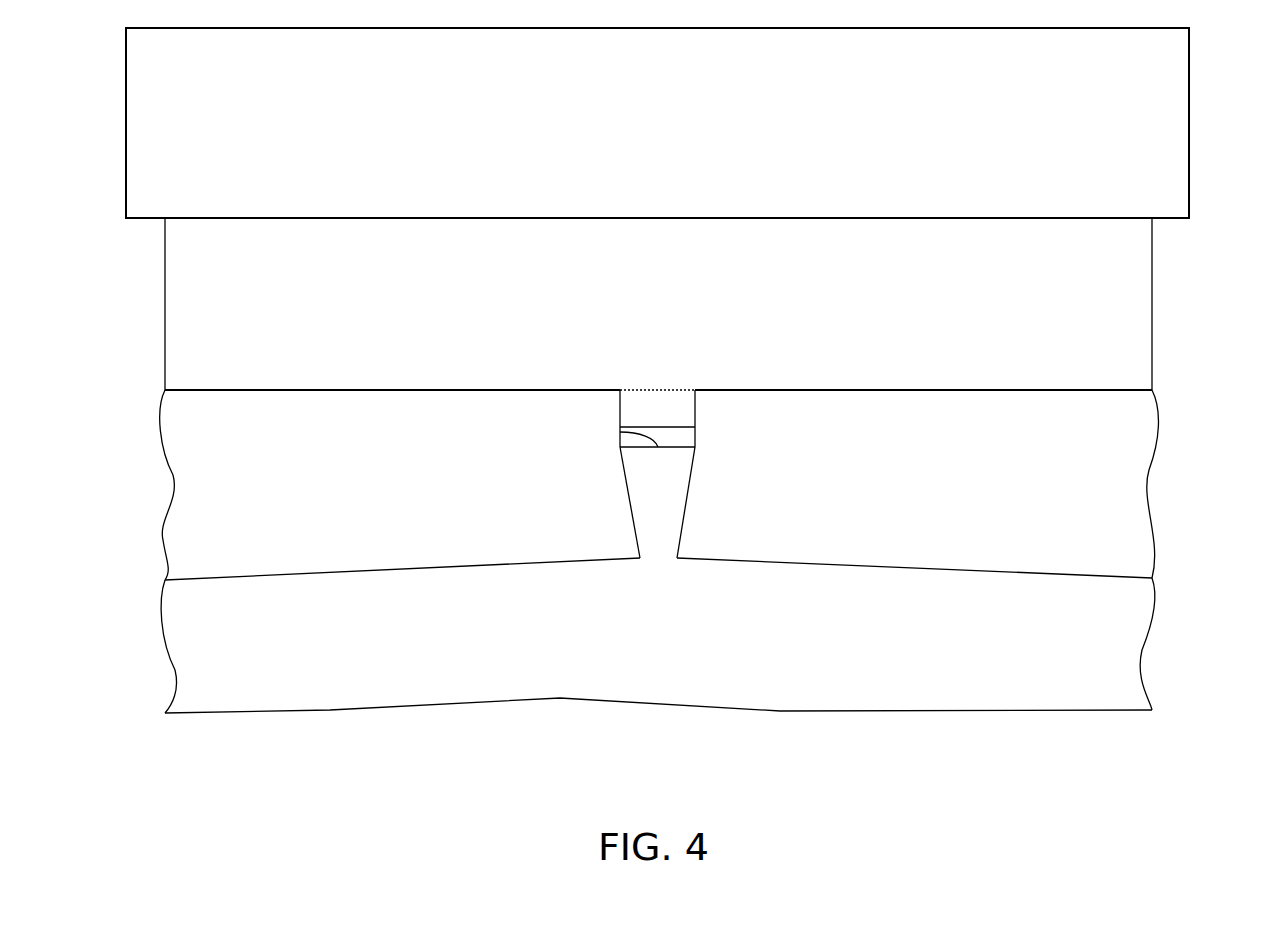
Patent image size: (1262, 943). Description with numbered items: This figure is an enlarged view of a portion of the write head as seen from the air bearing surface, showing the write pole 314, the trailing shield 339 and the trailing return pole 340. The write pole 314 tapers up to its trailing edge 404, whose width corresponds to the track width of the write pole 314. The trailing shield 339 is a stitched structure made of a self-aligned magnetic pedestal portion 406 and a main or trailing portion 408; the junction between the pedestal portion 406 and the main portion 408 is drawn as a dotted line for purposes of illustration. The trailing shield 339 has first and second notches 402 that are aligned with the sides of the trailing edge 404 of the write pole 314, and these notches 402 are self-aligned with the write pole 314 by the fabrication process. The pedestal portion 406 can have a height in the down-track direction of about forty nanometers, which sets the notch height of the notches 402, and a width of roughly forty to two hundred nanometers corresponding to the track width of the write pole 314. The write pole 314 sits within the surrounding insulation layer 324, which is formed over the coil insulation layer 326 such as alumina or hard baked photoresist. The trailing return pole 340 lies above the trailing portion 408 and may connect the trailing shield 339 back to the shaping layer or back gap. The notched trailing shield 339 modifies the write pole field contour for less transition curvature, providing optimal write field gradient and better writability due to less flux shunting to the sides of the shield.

The trailing return pole 340 is at (716, 127).
The main or trailing portion of the trailing shield 408 is at (702, 292).
The trailing shield 339 is at (1152, 281).
The insulation layer 324 is at (399, 483).
The coil insulation layer 326 is at (712, 626).
The magnetic write pole 314 is at (648, 486).
The notches 402 is at (620, 392).
The trailing edge of the write pole 404 is at (620, 433).
The magnetic pedestal portion 406 is at (650, 408).